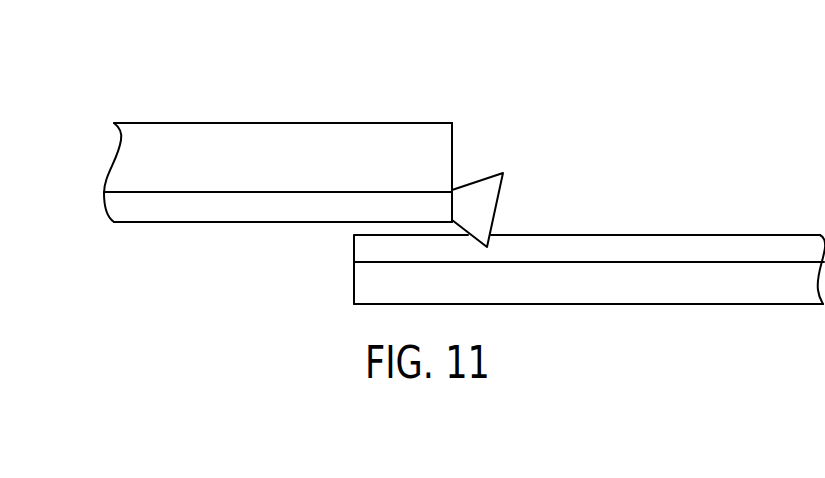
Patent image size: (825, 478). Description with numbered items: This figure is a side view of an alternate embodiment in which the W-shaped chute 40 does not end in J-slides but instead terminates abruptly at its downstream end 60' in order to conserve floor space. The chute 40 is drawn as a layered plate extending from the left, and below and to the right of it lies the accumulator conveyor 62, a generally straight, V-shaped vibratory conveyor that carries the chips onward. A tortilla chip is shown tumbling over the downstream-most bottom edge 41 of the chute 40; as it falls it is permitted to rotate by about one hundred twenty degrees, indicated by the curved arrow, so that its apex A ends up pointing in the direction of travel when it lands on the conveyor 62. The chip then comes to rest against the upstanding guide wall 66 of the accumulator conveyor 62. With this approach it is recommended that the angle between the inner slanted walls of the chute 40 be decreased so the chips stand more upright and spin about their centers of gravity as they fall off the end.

The W-shaped chute 40 is at (284, 108).
The downstream end of the W-shaped chute 60' is at (496, 151).
The downstream-most bottom edge 41 is at (450, 219).
The apex A is at (527, 210).
The accumulator conveyor 62 is at (751, 214).
The guide wall 66 is at (731, 290).